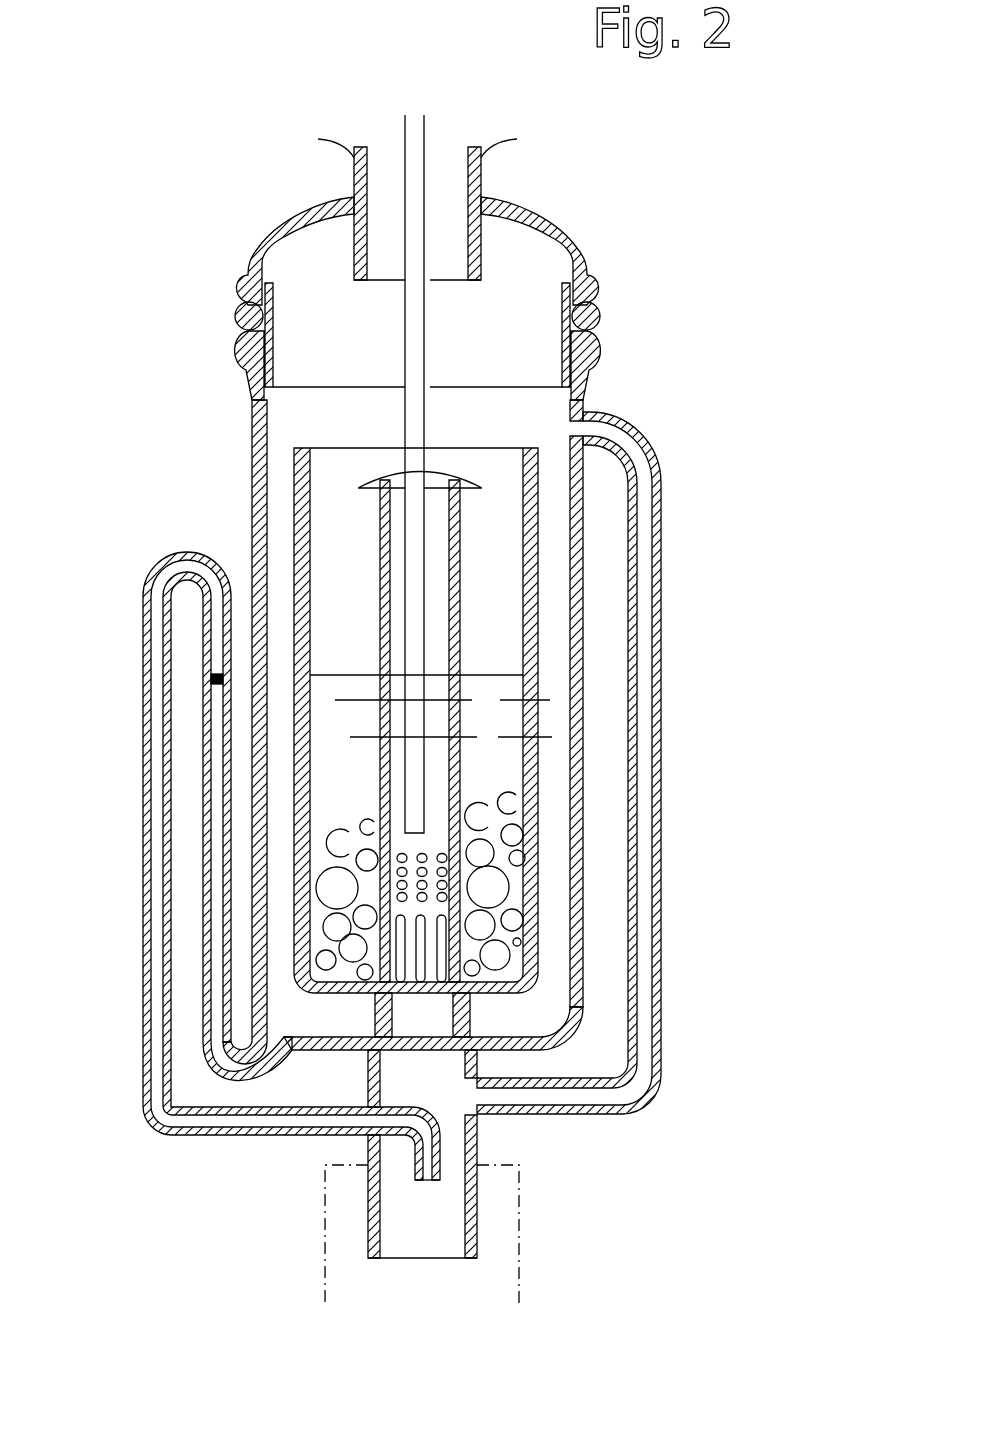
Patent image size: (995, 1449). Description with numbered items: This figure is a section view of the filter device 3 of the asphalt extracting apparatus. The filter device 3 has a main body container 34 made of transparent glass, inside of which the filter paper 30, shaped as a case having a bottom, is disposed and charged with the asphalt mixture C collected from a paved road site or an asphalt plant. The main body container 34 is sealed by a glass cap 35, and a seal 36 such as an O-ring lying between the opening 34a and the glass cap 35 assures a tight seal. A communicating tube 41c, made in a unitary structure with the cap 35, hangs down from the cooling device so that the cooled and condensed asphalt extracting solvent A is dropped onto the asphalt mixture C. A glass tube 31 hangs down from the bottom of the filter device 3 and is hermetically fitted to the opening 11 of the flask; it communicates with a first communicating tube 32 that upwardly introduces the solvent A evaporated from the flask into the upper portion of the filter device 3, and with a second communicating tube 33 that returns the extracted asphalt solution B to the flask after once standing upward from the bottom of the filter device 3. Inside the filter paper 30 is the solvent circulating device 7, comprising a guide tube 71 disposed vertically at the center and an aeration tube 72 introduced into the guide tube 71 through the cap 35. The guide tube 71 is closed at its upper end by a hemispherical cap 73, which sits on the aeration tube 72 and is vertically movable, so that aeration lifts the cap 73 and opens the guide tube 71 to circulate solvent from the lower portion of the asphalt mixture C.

The filter device 3 is at (243, 447).
The solvent circulating device 7 is at (455, 528).
The opening 11 is at (490, 1267).
The filter paper 30 is at (533, 625).
The glass tube 31 is at (477, 1142).
The first communicating tube 32 is at (642, 548).
The second communicating tube 33 is at (237, 866).
The main body container 34 is at (583, 884).
The opening 34a is at (597, 356).
The glass cap 35 is at (553, 238).
The seal 36 is at (590, 309).
The communicating tube 41c is at (355, 177).
The guide tube 71 is at (380, 545).
The aeration tube 72 is at (427, 150).
The hemispherical cap 73 is at (478, 480).
The asphalt extracting solvent A is at (502, 772).
The asphalt solution B is at (215, 722).
The asphalt mixture C is at (523, 927).